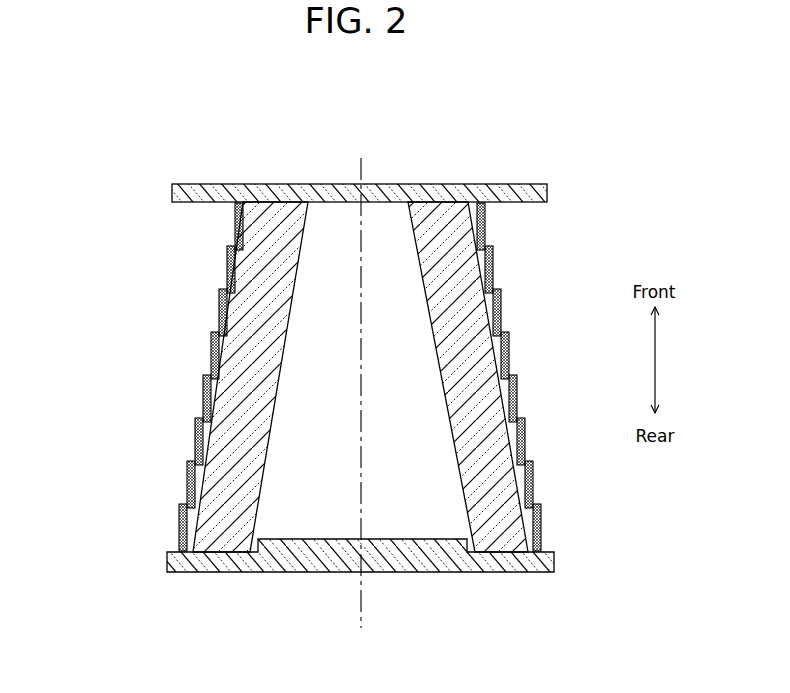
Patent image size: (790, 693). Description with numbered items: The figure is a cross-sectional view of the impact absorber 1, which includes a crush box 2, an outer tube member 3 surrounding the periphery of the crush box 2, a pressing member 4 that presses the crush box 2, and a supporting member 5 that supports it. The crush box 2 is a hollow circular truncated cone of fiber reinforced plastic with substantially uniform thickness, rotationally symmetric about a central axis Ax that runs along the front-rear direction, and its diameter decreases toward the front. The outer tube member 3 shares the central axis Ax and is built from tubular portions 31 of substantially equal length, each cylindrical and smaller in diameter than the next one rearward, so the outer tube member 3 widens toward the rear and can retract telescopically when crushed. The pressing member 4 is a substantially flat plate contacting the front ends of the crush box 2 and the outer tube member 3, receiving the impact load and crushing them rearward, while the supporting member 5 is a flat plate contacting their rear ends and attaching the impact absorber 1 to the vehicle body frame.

The impact absorber 1 is at (354, 124).
The crush box 2 is at (473, 385).
The outer tube member 3 is at (76, 262).
The tubular portion 31 is at (213, 355).
The pressing member 4 is at (498, 185).
The supporting member 5 is at (278, 572).
The central axis Ax is at (362, 610).